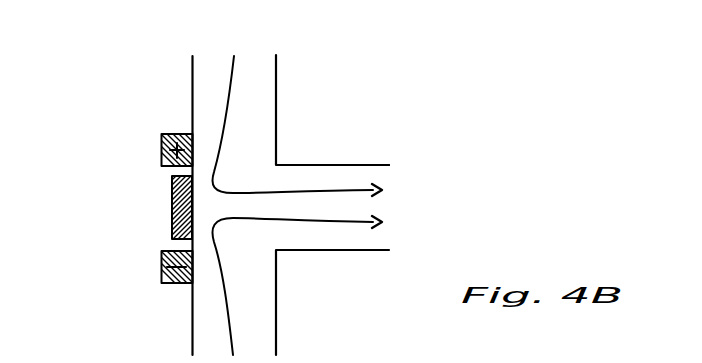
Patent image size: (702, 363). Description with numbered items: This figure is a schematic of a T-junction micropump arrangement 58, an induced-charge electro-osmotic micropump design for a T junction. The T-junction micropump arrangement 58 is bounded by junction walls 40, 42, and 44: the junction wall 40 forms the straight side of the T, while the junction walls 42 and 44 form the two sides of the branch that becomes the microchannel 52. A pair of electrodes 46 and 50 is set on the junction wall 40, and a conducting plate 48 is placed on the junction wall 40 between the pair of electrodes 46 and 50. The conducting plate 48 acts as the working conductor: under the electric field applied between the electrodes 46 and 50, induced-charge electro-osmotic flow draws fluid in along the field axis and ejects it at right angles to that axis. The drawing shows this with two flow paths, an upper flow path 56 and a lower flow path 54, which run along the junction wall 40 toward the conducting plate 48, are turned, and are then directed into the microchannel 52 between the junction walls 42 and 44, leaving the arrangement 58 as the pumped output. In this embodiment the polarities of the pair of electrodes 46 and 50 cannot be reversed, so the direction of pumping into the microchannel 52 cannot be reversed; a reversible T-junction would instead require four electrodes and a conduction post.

The junction wall 40 is at (132, 229).
The junction wall 42 is at (314, 270).
The junction wall 44 is at (344, 103).
The electrode 46 is at (166, 133).
The conducting plate 48 is at (171, 195).
The electrode 50 is at (167, 283).
The microchannel 52 is at (329, 173).
The lower fluid stream 54 is at (258, 310).
The upper fluid stream 56 is at (261, 117).
The T-junction micropump arrangement 58 is at (423, 189).